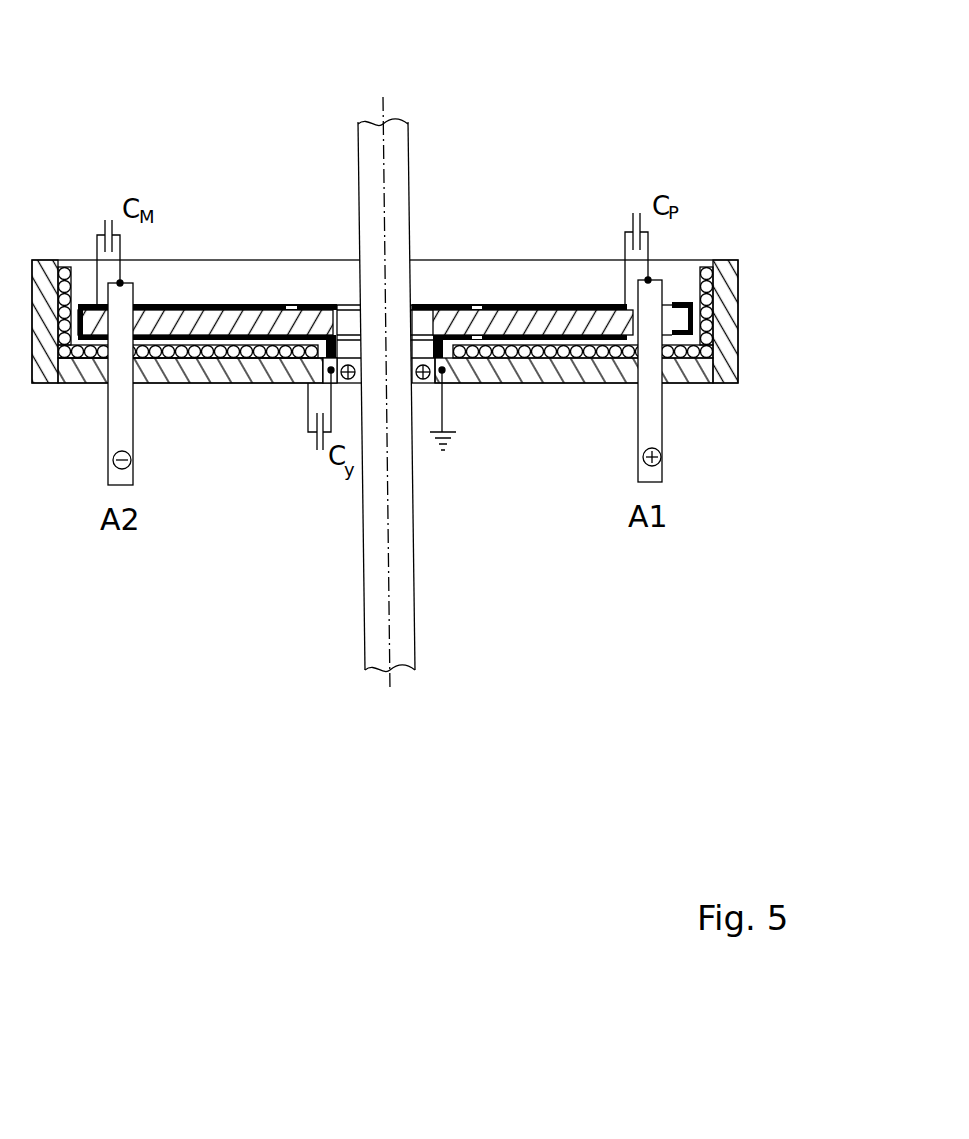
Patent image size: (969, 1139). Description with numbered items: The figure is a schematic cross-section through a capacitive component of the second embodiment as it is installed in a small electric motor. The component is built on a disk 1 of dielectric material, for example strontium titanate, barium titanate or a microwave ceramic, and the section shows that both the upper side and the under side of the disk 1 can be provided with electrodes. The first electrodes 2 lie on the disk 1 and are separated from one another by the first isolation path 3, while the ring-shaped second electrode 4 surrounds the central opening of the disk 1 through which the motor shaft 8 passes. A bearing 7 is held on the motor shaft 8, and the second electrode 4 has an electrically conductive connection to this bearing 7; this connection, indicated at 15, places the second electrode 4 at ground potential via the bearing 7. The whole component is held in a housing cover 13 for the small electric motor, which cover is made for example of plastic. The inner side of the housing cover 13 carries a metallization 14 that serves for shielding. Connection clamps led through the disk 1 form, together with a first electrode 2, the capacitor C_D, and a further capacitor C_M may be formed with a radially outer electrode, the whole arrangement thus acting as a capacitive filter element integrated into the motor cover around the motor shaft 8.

The disk 1 is at (733, 383).
The first electrode 2 is at (192, 303).
The first isolation path 3 is at (287, 303).
The second electrode 4 is at (315, 303).
The bearing 7 is at (415, 385).
The motor shaft 8 is at (393, 128).
The housing cover 13 is at (170, 360).
The metallization 14 is at (213, 360).
The connection of the second electrode with the bearing 15 is at (287, 353).